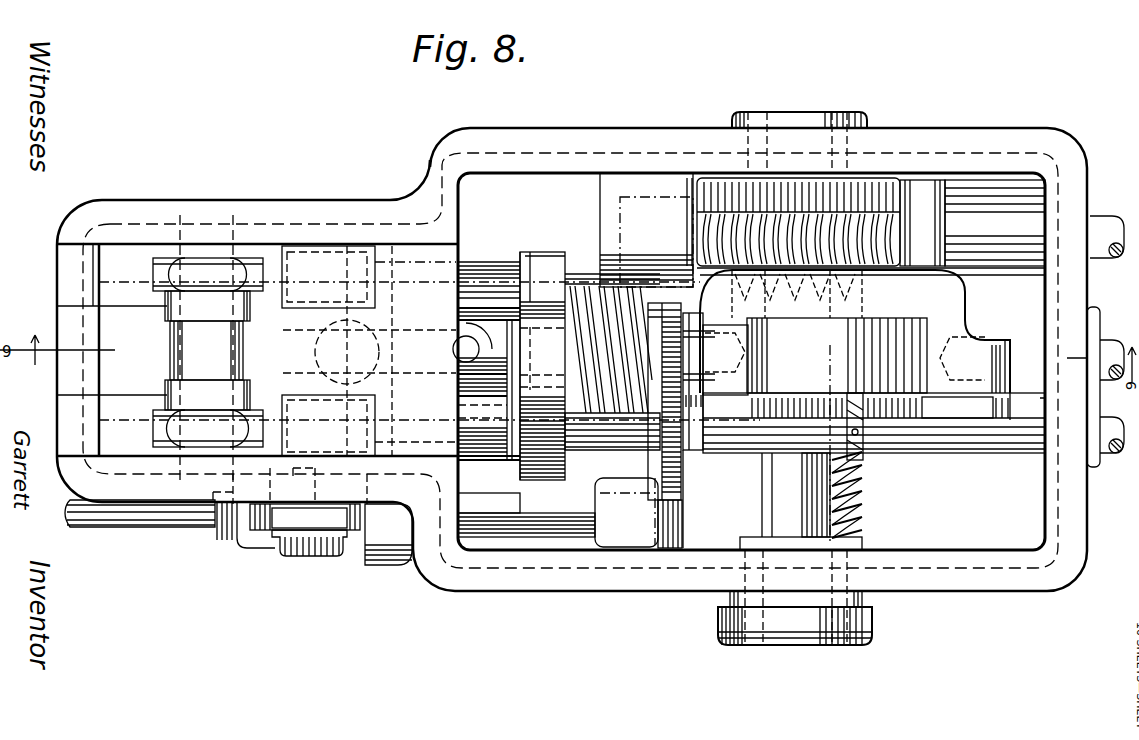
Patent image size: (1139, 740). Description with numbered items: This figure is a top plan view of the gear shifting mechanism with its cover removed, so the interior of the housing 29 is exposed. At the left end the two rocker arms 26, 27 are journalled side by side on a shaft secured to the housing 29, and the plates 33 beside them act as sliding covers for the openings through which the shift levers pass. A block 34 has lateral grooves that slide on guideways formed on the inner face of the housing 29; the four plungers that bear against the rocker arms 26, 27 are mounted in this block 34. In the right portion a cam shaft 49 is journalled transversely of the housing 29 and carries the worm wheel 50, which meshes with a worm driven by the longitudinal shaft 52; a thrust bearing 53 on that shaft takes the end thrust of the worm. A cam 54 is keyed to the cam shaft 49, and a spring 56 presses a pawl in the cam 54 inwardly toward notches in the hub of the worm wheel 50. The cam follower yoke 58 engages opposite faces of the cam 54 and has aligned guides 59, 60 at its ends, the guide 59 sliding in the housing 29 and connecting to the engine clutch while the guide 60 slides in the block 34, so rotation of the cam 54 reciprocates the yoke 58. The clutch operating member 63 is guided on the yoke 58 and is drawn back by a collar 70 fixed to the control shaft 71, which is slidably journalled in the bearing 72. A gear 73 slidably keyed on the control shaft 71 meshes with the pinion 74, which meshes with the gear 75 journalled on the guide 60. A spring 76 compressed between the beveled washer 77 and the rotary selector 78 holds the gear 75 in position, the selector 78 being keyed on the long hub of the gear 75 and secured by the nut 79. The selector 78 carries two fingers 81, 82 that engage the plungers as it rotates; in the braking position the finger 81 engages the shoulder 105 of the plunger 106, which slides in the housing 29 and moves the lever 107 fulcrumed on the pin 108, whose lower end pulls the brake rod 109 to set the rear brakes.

The rocker arm 26 is at (163, 275).
The rocker arm 27 is at (163, 421).
The housing 29 is at (240, 212).
The plates 33 is at (328, 351).
The block 34 is at (369, 351).
The cam shaft 49 is at (801, 501).
The worm wheel 50 is at (878, 222).
The shaft 52 is at (925, 228).
The thrust bearing 53 is at (695, 200).
The cam 54 is at (837, 355).
The spring 56 is at (862, 506).
The cam follower yoke 58 is at (871, 330).
The guide 59 is at (1122, 380).
The guide 60 is at (472, 300).
The clutch operating member 63 is at (957, 407).
The collar 70 is at (863, 462).
The control shaft 71 is at (997, 430).
The bearing 72 is at (715, 430).
The gear 73 is at (658, 466).
The pinion 74 is at (678, 285).
The gear 75 is at (645, 284).
The spring 76 is at (590, 285).
The beveled washer 77 is at (610, 282).
The rotary selector 78 is at (520, 470).
The nut 79 is at (508, 376).
The finger 81 is at (542, 366).
The finger 82 is at (565, 466).
The shoulder 105 is at (520, 505).
The plunger 106 is at (489, 503).
The lever 107 is at (312, 516).
The pin 108 is at (307, 556).
The brake rod 109 is at (168, 512).